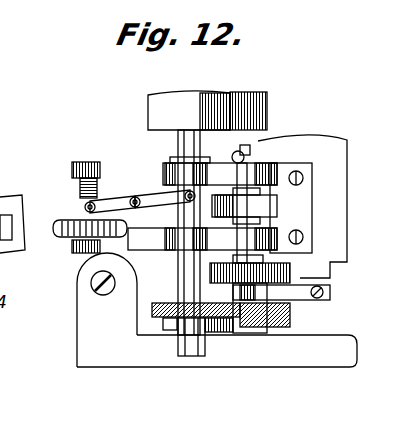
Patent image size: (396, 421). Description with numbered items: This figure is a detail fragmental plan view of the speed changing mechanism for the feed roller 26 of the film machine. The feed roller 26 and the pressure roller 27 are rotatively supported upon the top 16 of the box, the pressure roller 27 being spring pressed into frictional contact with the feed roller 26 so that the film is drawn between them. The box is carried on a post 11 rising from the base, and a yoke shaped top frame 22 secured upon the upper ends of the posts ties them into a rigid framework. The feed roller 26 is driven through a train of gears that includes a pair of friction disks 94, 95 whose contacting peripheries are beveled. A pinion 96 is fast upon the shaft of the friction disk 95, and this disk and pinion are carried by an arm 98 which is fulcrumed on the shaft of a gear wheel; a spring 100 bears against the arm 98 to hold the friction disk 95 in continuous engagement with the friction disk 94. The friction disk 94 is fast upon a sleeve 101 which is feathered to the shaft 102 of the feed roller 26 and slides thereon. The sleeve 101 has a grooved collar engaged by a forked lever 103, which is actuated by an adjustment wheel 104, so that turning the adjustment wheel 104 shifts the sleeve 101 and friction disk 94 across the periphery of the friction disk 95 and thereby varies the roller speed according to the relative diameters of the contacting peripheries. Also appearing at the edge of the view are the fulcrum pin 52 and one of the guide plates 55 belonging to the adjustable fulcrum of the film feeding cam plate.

The post 11 is at (76, 300).
The top 16 is at (302, 206).
The top frame 22 is at (217, 351).
The feed roller 26 is at (189, 127).
The pressure roller 27 is at (258, 110).
The fulcrum pin 52 is at (9, 134).
The guide plate 55 is at (2, 197).
The friction disk 94 is at (157, 318).
The friction disk 95 is at (228, 332).
The pinion 96 is at (290, 275).
The arm 98 is at (255, 327).
The spring 100 is at (293, 300).
The sleeve 101 is at (185, 277).
The shaft 102 is at (178, 148).
The forked lever 103 is at (117, 197).
The adjustment wheel 104 is at (63, 243).